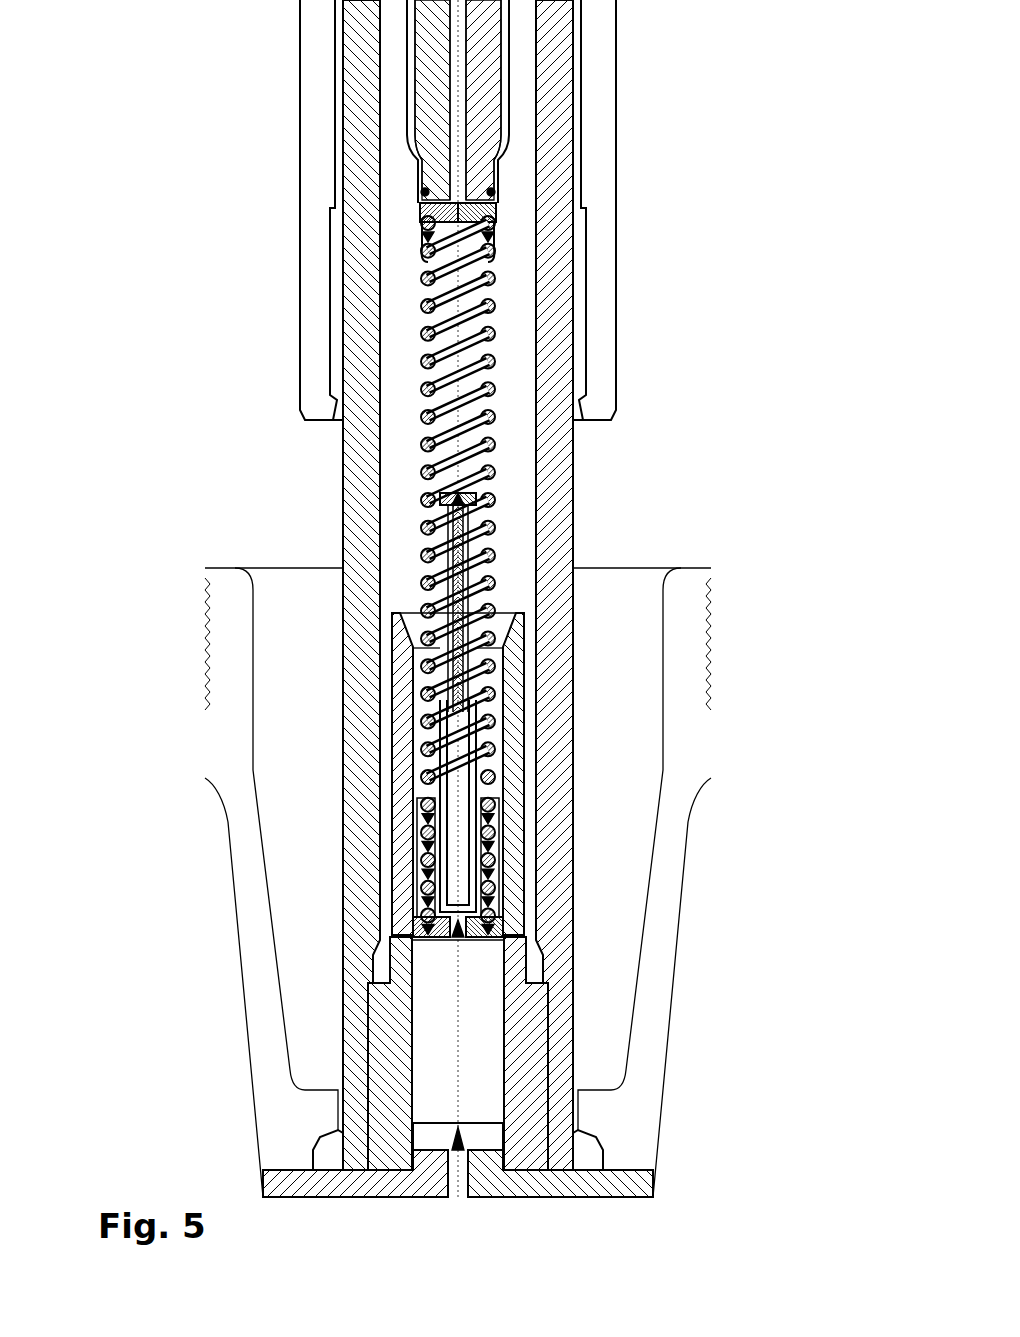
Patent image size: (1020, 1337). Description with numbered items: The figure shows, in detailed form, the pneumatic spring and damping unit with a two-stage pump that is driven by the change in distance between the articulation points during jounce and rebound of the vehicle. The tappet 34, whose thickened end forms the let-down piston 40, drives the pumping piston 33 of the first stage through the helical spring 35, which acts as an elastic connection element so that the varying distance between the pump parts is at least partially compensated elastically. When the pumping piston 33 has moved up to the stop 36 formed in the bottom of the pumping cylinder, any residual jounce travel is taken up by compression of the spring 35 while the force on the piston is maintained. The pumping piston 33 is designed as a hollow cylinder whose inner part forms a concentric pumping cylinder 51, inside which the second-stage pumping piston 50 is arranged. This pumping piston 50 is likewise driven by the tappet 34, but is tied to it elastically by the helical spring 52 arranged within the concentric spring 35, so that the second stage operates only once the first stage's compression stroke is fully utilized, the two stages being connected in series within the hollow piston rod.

The tappet 34 is at (428, 108).
The let-down piston 40 is at (458, 100).
The helical spring 52 is at (480, 408).
The helical spring 35 is at (512, 508).
The pumping piston 50 is at (460, 714).
The pumping cylinder 51 is at (462, 842).
The pumping piston 33 is at (476, 930).
The stop 36 is at (480, 1135).